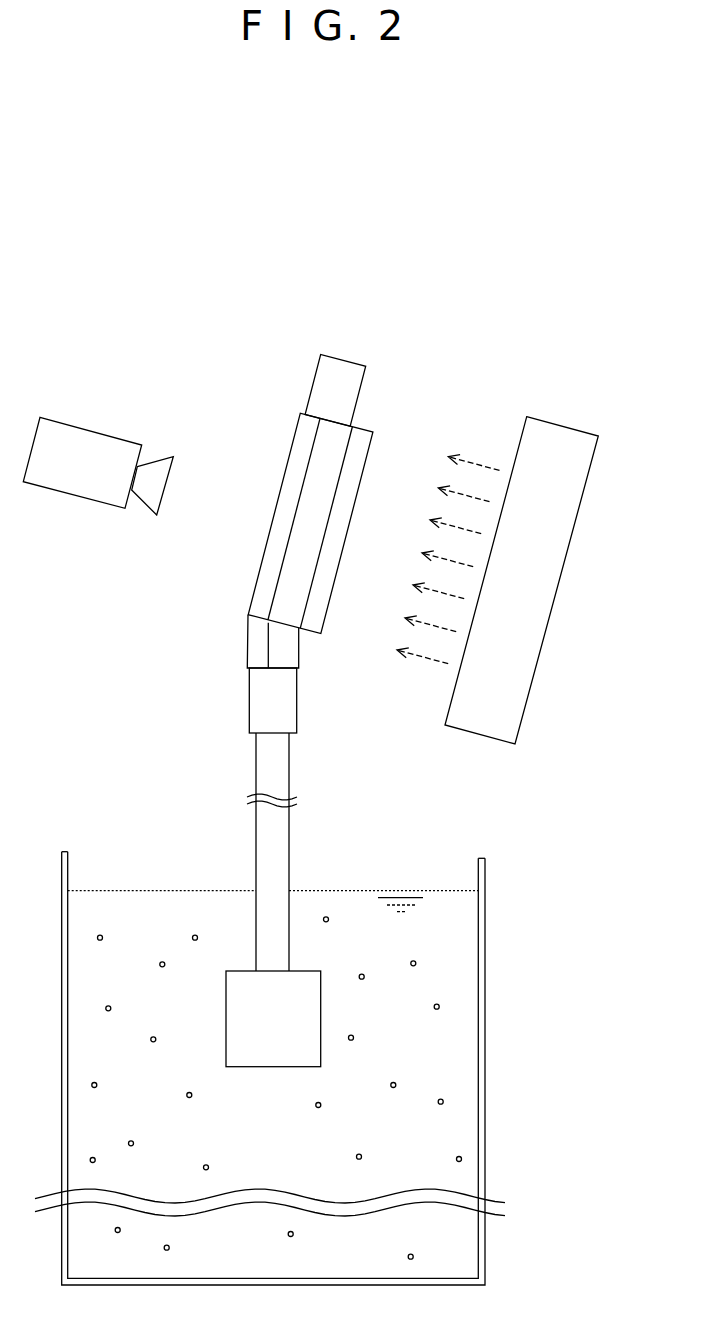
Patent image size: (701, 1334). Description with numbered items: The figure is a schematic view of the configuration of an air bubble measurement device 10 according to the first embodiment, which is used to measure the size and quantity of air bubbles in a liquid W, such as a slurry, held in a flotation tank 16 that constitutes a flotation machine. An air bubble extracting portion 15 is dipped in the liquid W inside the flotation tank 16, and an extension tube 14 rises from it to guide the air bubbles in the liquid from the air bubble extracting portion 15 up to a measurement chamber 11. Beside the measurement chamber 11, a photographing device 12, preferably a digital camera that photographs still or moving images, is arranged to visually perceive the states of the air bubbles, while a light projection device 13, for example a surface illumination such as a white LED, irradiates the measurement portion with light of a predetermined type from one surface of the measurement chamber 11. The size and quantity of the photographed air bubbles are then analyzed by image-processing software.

The air bubble measurement device 10 is at (522, 255).
The measurement chamber 11 is at (377, 350).
The photographing device 12 is at (99, 450).
The light projection device 13 is at (533, 608).
The extension tube 14 is at (278, 845).
The air bubble extracting portion 15 is at (270, 1048).
The flotation tank 16 is at (487, 945).
The liquid W is at (453, 1060).